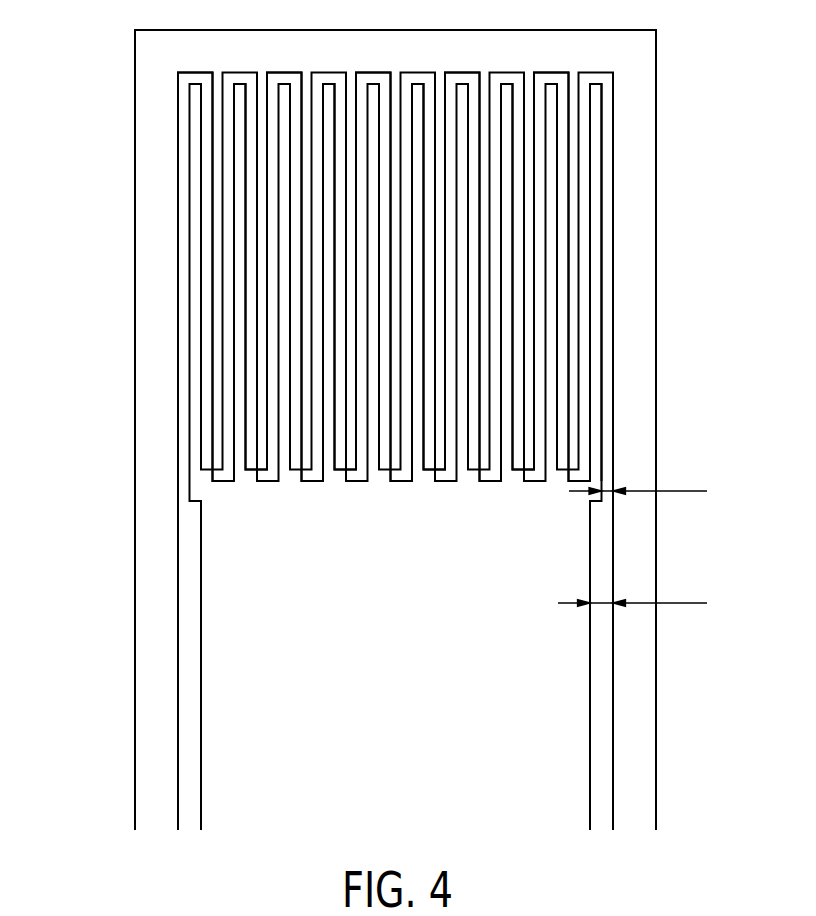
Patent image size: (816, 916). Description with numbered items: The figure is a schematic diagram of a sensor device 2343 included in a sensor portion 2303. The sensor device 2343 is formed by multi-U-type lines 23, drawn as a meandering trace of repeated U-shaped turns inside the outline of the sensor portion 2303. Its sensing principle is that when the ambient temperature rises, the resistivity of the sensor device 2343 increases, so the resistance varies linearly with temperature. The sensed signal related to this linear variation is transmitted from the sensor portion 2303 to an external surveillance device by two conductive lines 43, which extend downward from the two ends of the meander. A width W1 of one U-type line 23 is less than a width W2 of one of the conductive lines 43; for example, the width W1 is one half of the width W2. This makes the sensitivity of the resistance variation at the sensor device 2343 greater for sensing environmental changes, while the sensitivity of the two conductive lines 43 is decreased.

The sensor portion 2303 is at (135, 87).
The U-type line 23 is at (613, 343).
The sensor device 2343 is at (613, 113).
The conductive line 43 is at (613, 661).
The width of U-type line W1 is at (638, 476).
The width of conductive line W2 is at (632, 588).